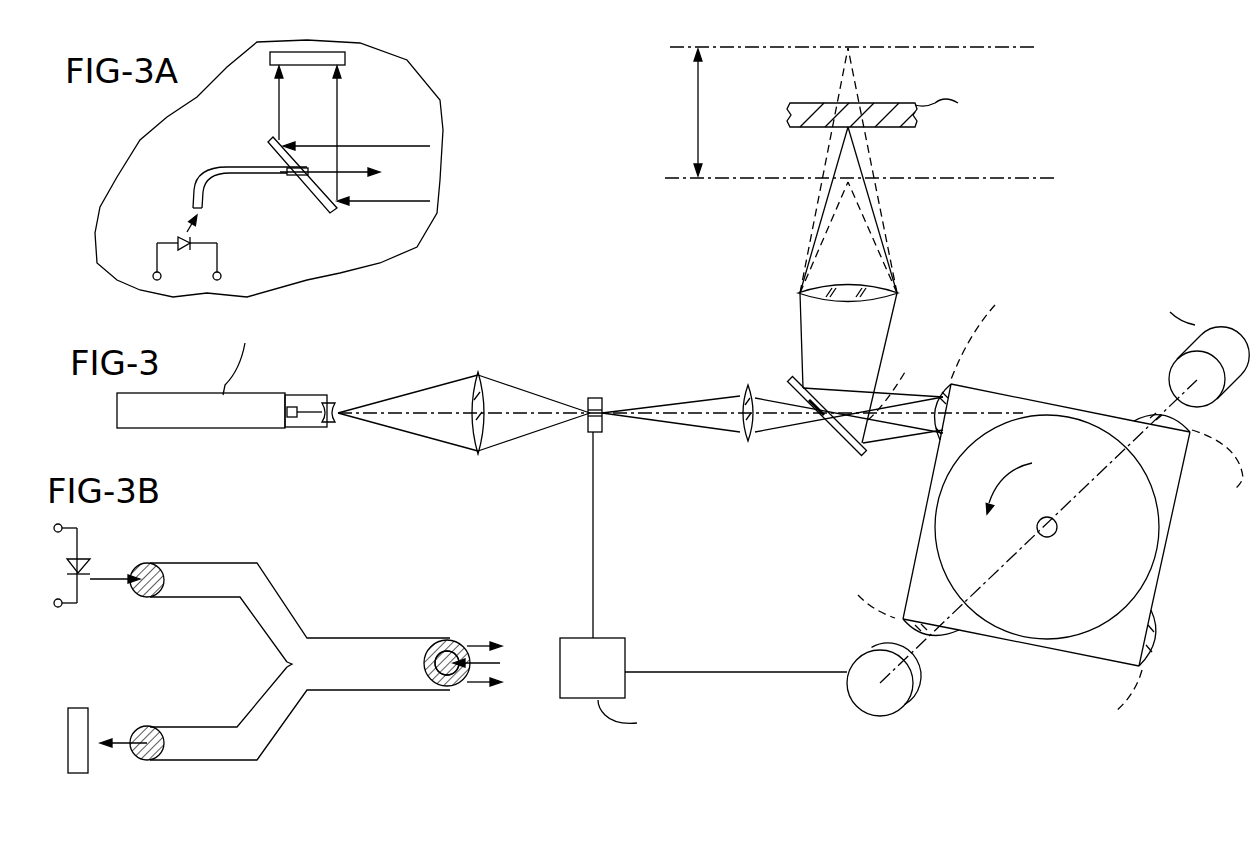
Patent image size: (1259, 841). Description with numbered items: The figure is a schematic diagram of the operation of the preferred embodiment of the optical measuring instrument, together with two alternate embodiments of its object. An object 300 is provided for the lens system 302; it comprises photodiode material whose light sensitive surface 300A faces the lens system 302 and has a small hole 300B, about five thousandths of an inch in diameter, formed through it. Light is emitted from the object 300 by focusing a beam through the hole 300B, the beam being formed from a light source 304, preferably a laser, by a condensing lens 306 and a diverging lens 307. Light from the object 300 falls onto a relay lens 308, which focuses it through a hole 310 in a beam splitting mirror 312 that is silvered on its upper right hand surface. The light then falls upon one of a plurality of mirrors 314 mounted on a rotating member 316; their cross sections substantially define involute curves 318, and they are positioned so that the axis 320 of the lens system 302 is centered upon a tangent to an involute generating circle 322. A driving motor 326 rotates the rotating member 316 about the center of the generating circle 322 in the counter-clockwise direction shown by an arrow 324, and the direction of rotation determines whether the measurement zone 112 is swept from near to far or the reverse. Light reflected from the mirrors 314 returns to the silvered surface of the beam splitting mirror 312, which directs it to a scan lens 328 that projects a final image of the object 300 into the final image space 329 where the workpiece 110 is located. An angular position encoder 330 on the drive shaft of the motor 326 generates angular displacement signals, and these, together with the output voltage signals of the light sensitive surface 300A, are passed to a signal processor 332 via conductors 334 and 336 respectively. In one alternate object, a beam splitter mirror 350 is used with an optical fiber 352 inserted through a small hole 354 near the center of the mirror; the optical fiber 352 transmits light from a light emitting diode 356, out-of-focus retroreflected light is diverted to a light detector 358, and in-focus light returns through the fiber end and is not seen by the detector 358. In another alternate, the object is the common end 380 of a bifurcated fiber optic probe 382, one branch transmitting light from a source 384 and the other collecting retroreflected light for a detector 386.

In FIG. 3, the workpiece 110 is at (913, 103).
In FIG. 3, the measurement zone 112 is at (697, 98).
In FIG. 3A, the object 300 is at (201, 146).
In FIG. 3, the object 300 is at (595, 385).
In FIG. 3, the light sensitive surface 300A is at (603, 405).
In FIG. 3, the small hole 300B is at (603, 418).
In FIG. 3, the lens system 302 is at (765, 295).
In FIG. 3, the light source 304 is at (237, 395).
In FIG. 3, the condensing lens 306 is at (482, 377).
In FIG. 3, the diverging lens 307 is at (337, 403).
In FIG. 3, the relay lens 308 is at (750, 443).
In FIG. 3, the hole 310 is at (818, 418).
In FIG. 3, the beam splitting mirror 312 is at (790, 377).
In FIG. 3, the mirrors 314 is at (943, 433).
In FIG. 3, the rotating member 316 is at (1097, 645).
In FIG. 3, the involute curves 318 is at (1190, 600).
In FIG. 3, the axis 320 is at (890, 387).
In FIG. 3, the involute generating circle 322 is at (1100, 422).
In FIG. 3, the arrow 324 is at (980, 516).
In FIG. 3, the driving motor 326 is at (1198, 333).
In FIG. 3, the scan lens 328 is at (798, 292).
In FIG. 3, the final image space 329 is at (1044, 152).
In FIG. 3, the angular position encoder 330 is at (910, 693).
In FIG. 3, the signal processor 332 is at (603, 698).
In FIG. 3, the conductor 334 is at (593, 493).
In FIG. 3, the conductor 336 is at (760, 672).
In FIG. 3A, the beam splitter mirror 350 is at (270, 147).
In FIG. 3A, the optical fiber 352 is at (208, 170).
In FIG. 3A, the small hole 354 is at (296, 176).
In FIG. 3A, the light emitting diode 356 is at (180, 240).
In FIG. 3A, the light detector 358 is at (345, 58).
In FIG. 3B, the common end 380 is at (463, 624).
In FIG. 3B, the bifurcated fiber optic probe 382 is at (360, 677).
In FIG. 3B, the source 384 is at (83, 558).
In FIG. 3B, the detector 386 is at (78, 773).